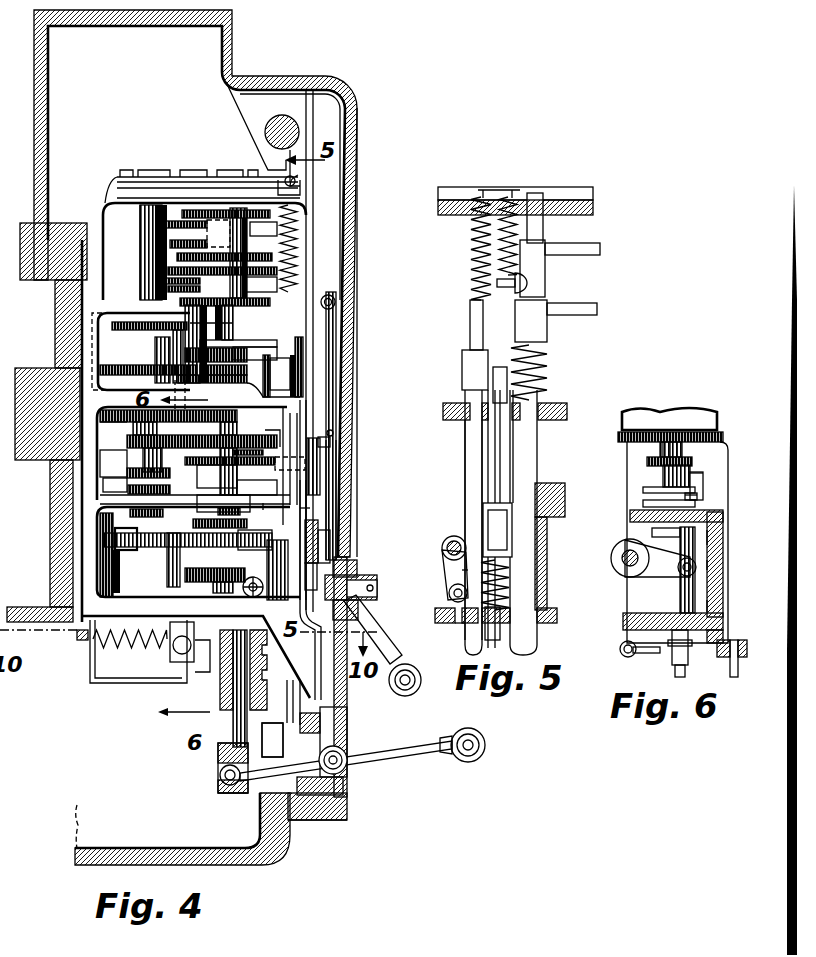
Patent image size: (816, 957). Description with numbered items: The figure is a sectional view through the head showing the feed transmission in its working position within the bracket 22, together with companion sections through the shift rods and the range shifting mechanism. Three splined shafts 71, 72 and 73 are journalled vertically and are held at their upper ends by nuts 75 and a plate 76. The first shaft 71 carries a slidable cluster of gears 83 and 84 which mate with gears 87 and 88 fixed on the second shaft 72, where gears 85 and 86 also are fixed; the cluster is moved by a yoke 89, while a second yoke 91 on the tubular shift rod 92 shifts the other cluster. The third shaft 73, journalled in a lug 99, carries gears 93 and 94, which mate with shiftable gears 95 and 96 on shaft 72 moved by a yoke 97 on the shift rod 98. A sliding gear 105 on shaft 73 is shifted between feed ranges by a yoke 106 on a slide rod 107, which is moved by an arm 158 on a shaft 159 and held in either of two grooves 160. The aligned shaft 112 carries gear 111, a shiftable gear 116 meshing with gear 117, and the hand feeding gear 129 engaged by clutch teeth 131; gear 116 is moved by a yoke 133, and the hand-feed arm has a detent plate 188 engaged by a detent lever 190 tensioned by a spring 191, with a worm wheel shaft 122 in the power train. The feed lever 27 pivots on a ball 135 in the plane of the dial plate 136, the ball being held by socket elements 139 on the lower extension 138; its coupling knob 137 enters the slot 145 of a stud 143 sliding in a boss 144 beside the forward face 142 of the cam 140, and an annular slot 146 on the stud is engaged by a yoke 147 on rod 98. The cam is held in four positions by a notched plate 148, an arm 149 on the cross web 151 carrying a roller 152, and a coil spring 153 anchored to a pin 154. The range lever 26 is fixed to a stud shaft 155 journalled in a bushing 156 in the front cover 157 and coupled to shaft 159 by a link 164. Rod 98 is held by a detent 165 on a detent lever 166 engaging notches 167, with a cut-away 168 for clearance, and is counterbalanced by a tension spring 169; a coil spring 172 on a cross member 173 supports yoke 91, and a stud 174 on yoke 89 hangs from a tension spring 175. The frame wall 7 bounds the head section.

In FIG. 4, the frame wall 7 is at (358, 262).
In FIG. 4, the bracket 22 is at (320, 228).
In FIG. 5, the bracket 22 is at (593, 209).
In FIG. 4, the range shifting lever 26 is at (391, 638).
In FIG. 4, the feed lever 27 is at (487, 756).
In FIG. 4, the first shaft 71 is at (207, 328).
In FIG. 4, the second shaft 72 is at (207, 313).
In FIG. 4, the third shaft 73 is at (150, 215).
In FIG. 6, the third shaft 73 is at (683, 450).
In FIG. 4, the nuts 75 is at (208, 174).
In FIG. 4, the plate 76 is at (143, 178).
In FIG. 5, the plate 76 is at (498, 190).
In FIG. 6, the plate 76 is at (724, 434).
In FIG. 4, the gear 83 is at (165, 225).
In FIG. 4, the gear 84 is at (170, 244).
In FIG. 4, the gear 85 is at (165, 281).
In FIG. 4, the gear 86 is at (168, 270).
In FIG. 4, the gear 87 is at (227, 210).
In FIG. 4, the gear 88 is at (177, 257).
In FIG. 4, the yoke 89 is at (268, 240).
In FIG. 5, the yoke 89 is at (545, 269).
In FIG. 4, the yoke 91 is at (268, 298).
In FIG. 5, the yoke 91 is at (547, 330).
In FIG. 4, the tubular shift rod 92 is at (270, 424).
In FIG. 4, the gear 93 is at (118, 324).
In FIG. 4, the gear 94 is at (112, 365).
In FIG. 4, the gear 95 is at (170, 352).
In FIG. 4, the gear 96 is at (175, 362).
In FIG. 4, the yoke 97 is at (305, 345).
In FIG. 5, the yoke 97 is at (465, 372).
In FIG. 4, the shift rod 98 is at (303, 392).
In FIG. 5, the shift rod 98 is at (467, 453).
In FIG. 4, the lug 99 is at (168, 289).
In FIG. 4, the gear 105 is at (127, 440).
In FIG. 6, the gear 105 is at (693, 461).
In FIG. 4, the yoke 106 is at (100, 481).
In FIG. 4, the slide rod 107 is at (100, 563).
In FIG. 4, the gear 111 is at (263, 447).
In FIG. 4, the shaft 112 is at (237, 478).
In FIG. 6, the shaft 112 is at (697, 500).
In FIG. 4, the shiftable gear 116 is at (197, 466).
In FIG. 6, the shiftable gear 116 is at (695, 496).
In FIG. 4, the gear 117 is at (130, 426).
In FIG. 4, the shaft 122 is at (268, 379).
In FIG. 4, the hand feeding gear 129 is at (168, 549).
In FIG. 6, the hand feeding gear 129 is at (720, 563).
In FIG. 4, the clutch teeth 131 is at (194, 522).
In FIG. 6, the clutch teeth 131 is at (723, 540).
In FIG. 4, the yoke 133 is at (263, 503).
In FIG. 4, the ball 135 is at (347, 771).
In FIG. 4, the dial plate 136 is at (347, 789).
In FIG. 4, the coupling knob 137 is at (238, 793).
In FIG. 4, the lower extension 138 is at (347, 812).
In FIG. 4, the socket elements 139 is at (316, 820).
In FIG. 4, the cam 140 is at (153, 683).
In FIG. 4, the forward face 142 is at (268, 696).
In FIG. 4, the stud 143 is at (236, 723).
In FIG. 4, the boss 144 is at (220, 700).
In FIG. 4, the slot 145 is at (218, 786).
In FIG. 4, the annular slot 146 is at (218, 755).
In FIG. 4, the yoke 147 is at (222, 770).
In FIG. 4, the plate 148 is at (177, 658).
In FIG. 4, the arm 149 is at (170, 650).
In FIG. 6, the arm 149 is at (672, 652).
In FIG. 5, the cross web 151 is at (548, 622).
In FIG. 4, the roller 152 is at (203, 667).
In FIG. 6, the roller 152 is at (680, 677).
In FIG. 4, the coil spring 153 is at (105, 643).
In FIG. 6, the coil spring 153 is at (627, 657).
In FIG. 4, the pin 154 is at (77, 635).
In FIG. 6, the pin 154 is at (733, 677).
In FIG. 4, the stud shaft 155 is at (367, 590).
In FIG. 4, the bushing 156 is at (353, 567).
In FIG. 4, the front cover 157 is at (340, 523).
In FIG. 4, the arm 158 is at (120, 562).
In FIG. 6, the arm 158 is at (660, 568).
In FIG. 4, the shaft 159 is at (134, 548).
In FIG. 5, the shaft 159 is at (454, 536).
In FIG. 6, the shaft 159 is at (611, 560).
In FIG. 6, the grooves 160 is at (662, 628).
In FIG. 4, the link 164 is at (323, 560).
In FIG. 6, the link 164 is at (723, 607).
In FIG. 4, the detent 165 is at (258, 597).
In FIG. 5, the detent 165 is at (449, 595).
In FIG. 4, the detent lever 166 is at (240, 567).
In FIG. 5, the detent lever 166 is at (443, 565).
In FIG. 5, the detent notches 167 is at (460, 626).
In FIG. 5, the cut-away 168 is at (462, 575).
In FIG. 4, the tension spring 169 is at (298, 250).
In FIG. 5, the tension spring 169 is at (471, 268).
In FIG. 5, the coil spring 172 is at (547, 371).
In FIG. 4, the cross member 173 is at (210, 403).
In FIG. 5, the cross member 173 is at (568, 413).
In FIG. 5, the stud 174 is at (507, 288).
In FIG. 5, the tension spring 175 is at (518, 229).
In FIG. 4, the detent plate 188 is at (315, 506).
In FIG. 4, the detent lever 190 is at (330, 449).
In FIG. 4, the spring 191 is at (337, 302).